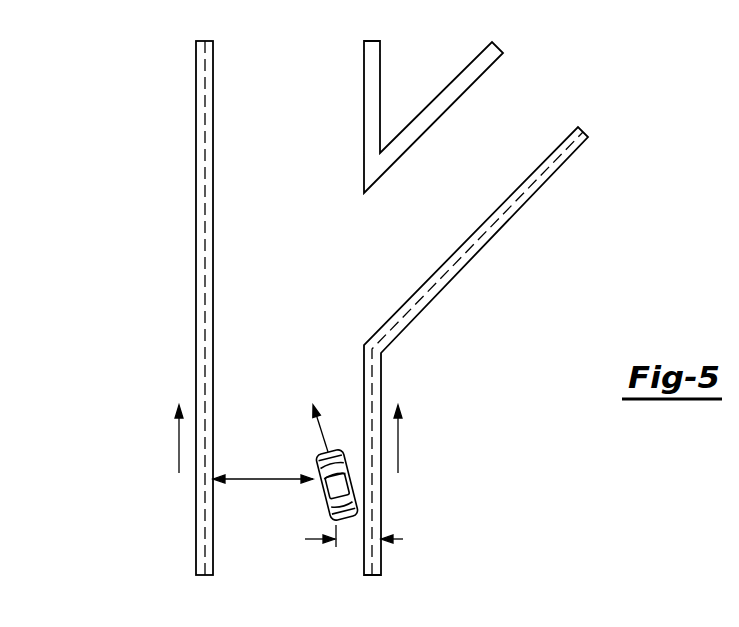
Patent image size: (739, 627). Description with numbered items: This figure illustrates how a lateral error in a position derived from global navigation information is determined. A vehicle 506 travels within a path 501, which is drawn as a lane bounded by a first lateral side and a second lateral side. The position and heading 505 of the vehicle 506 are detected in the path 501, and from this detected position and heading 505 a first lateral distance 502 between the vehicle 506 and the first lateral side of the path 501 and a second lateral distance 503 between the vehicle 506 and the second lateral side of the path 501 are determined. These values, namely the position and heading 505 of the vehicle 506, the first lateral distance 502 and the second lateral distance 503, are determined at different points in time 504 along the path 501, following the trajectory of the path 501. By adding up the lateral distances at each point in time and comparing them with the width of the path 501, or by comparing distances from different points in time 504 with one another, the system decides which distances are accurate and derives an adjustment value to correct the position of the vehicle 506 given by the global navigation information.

The path 501 is at (203, 110).
The first lateral distance 502 is at (244, 483).
The second lateral distance 503 is at (305, 540).
The points in time 504 is at (179, 440).
The vehicle heading direction 505 is at (320, 435).
The vehicle 506 is at (320, 492).